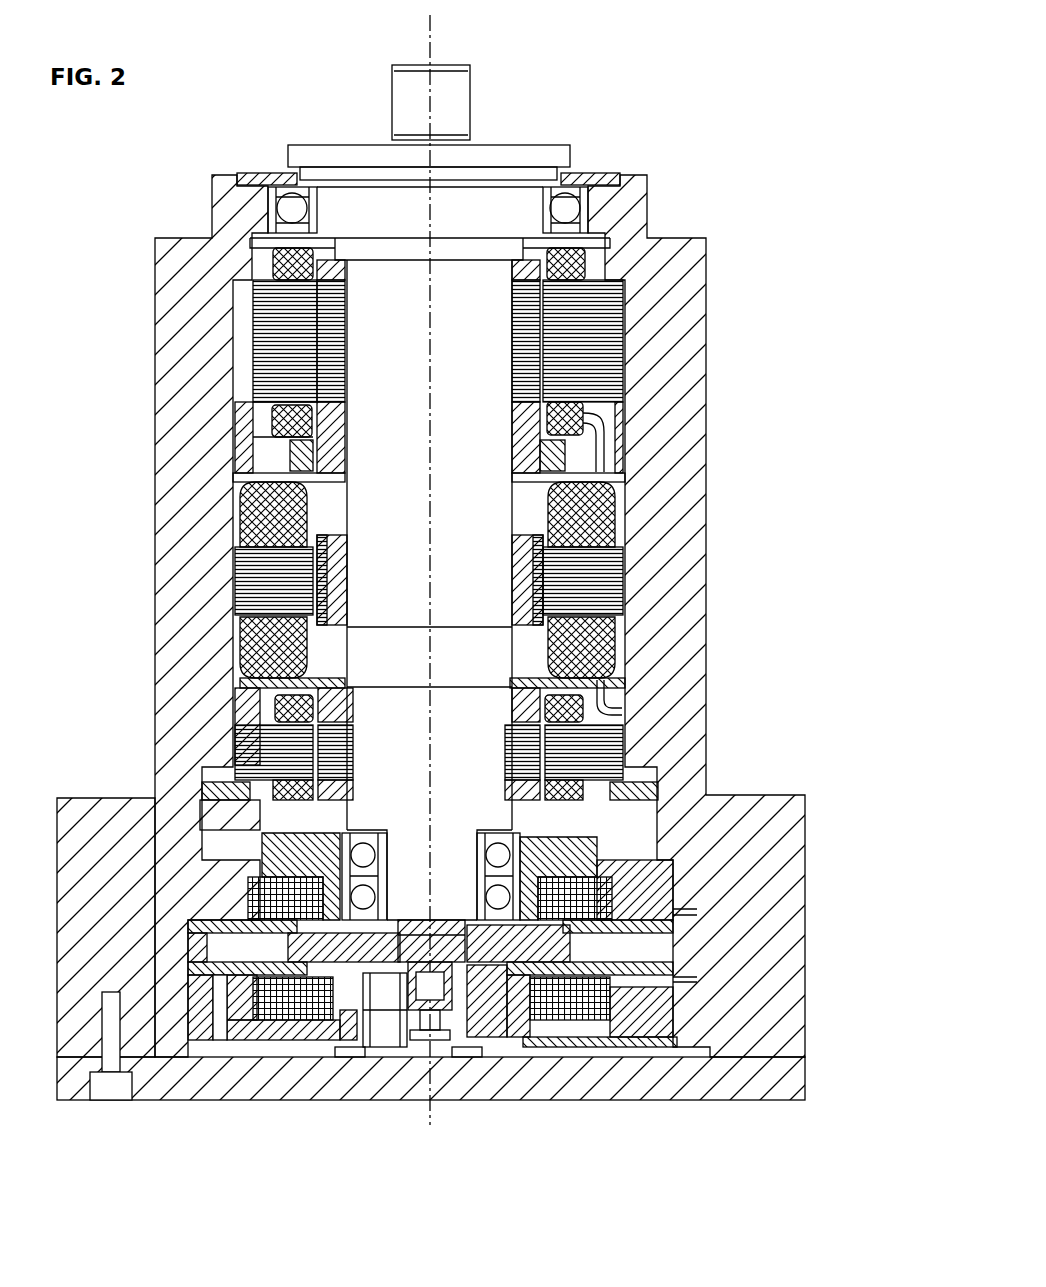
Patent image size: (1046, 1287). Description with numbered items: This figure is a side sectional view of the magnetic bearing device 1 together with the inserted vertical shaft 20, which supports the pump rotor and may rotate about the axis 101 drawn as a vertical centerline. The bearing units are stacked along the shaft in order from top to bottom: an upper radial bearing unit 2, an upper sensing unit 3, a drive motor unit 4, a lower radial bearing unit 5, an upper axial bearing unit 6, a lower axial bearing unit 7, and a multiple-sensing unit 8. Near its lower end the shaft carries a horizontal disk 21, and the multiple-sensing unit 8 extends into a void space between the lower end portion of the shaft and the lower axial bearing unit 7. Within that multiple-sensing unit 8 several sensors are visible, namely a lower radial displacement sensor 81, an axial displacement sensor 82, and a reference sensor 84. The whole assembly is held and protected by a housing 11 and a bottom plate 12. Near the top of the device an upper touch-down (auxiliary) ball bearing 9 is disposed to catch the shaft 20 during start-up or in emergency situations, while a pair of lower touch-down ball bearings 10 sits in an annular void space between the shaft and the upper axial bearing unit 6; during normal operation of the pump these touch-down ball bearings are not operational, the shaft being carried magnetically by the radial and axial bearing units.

The magnetic bearing device 1 is at (648, 148).
The upper radial bearing unit 2 is at (652, 366).
The upper sensing unit 3 is at (652, 452).
The drive motor unit 4 is at (652, 529).
The lower radial bearing unit 5 is at (652, 725).
The upper axial bearing unit 6 is at (692, 891).
The lower axial bearing unit 7 is at (692, 1001).
The multiple-sensing unit 8 is at (405, 1062).
The upper touch-down ball bearing 9 is at (570, 207).
The lower touch-down ball bearings 10 is at (497, 850).
The housing 11 is at (136, 830).
The bottom plate 12 is at (275, 1103).
The shaft 20 is at (357, 126).
The horizontal disk 21 is at (513, 950).
The lower radial displacement sensor 81 is at (483, 995).
The axial displacement sensor 82 is at (373, 1000).
The reference sensor 84 is at (352, 1062).
The axis 101 is at (450, 1064).